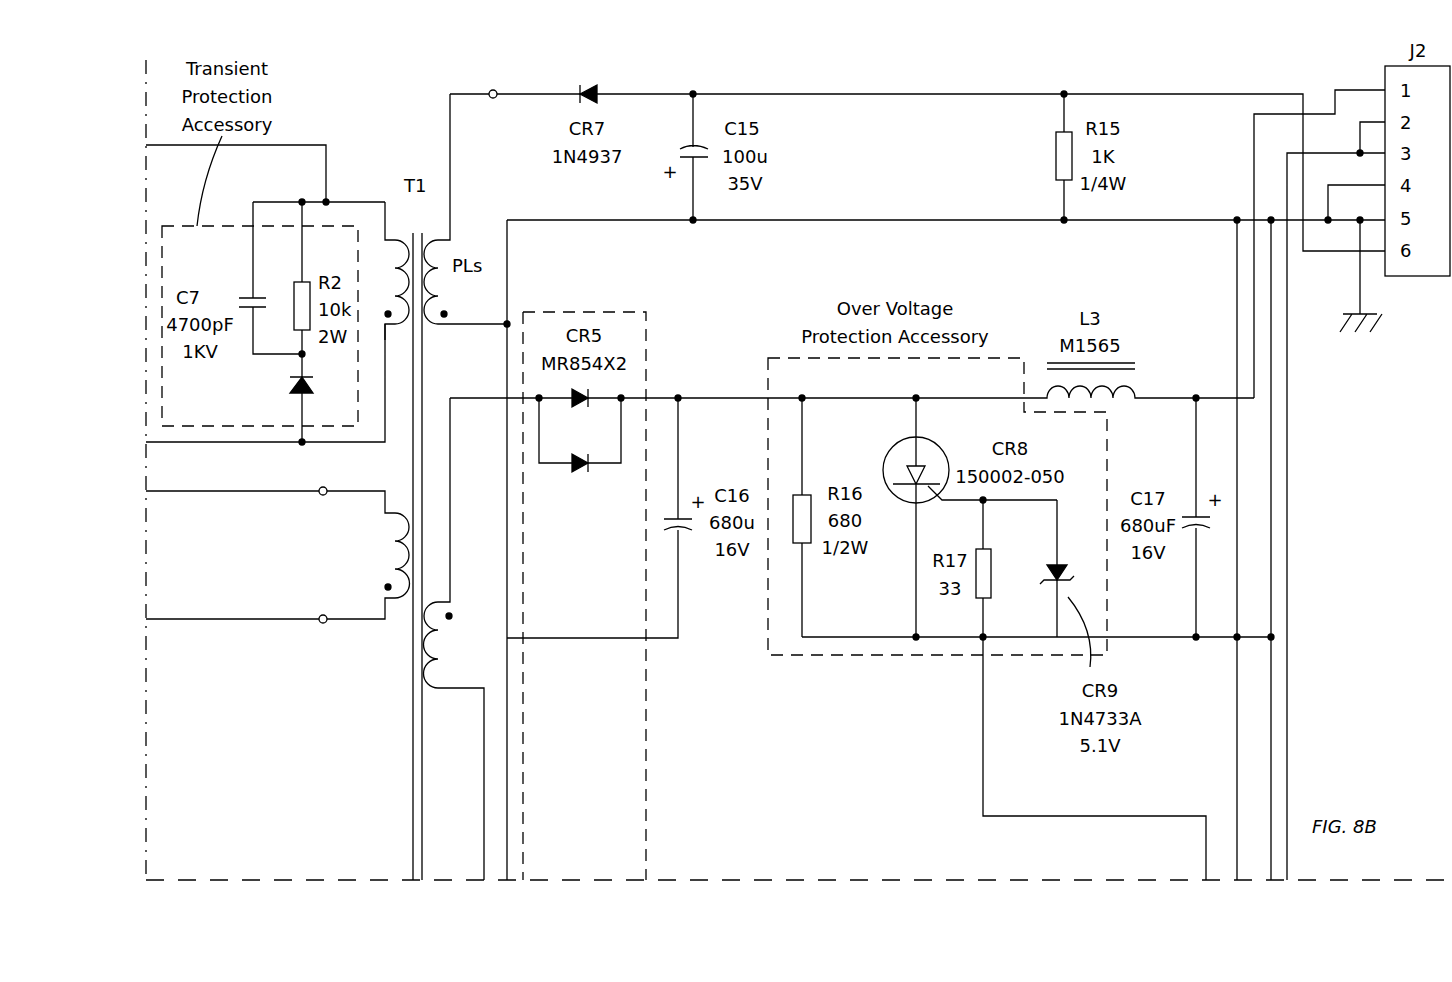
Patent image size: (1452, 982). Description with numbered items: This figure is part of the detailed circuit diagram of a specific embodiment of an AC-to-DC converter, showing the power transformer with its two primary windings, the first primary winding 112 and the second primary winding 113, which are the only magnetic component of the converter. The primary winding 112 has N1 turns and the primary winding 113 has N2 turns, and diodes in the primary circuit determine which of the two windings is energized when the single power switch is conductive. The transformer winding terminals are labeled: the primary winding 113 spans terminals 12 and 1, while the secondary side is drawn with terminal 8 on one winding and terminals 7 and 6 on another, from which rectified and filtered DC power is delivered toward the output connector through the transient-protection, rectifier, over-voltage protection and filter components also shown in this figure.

The primary winding 112 is at (381, 571).
The primary winding 113 is at (378, 197).
The transformer T1 terminal 12 is at (381, 235).
The transformer T1 terminal 1 is at (380, 328).
The transformer T1 terminal 8 is at (471, 342).
The transformer T1 terminal 7 is at (454, 508).
The transformer T1 terminal 6 is at (461, 784).